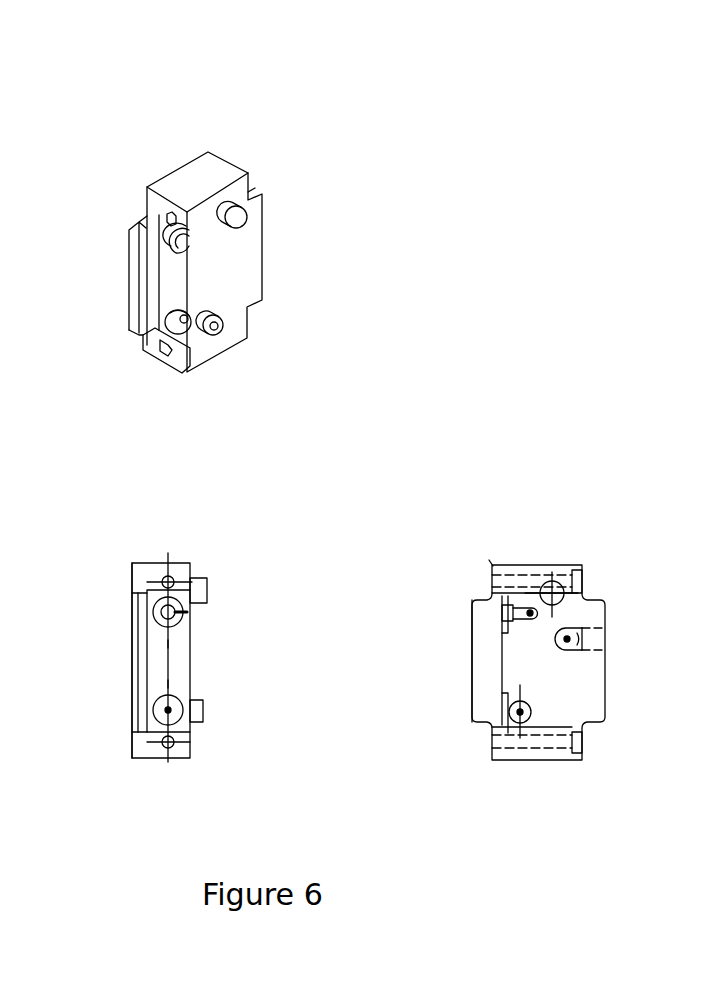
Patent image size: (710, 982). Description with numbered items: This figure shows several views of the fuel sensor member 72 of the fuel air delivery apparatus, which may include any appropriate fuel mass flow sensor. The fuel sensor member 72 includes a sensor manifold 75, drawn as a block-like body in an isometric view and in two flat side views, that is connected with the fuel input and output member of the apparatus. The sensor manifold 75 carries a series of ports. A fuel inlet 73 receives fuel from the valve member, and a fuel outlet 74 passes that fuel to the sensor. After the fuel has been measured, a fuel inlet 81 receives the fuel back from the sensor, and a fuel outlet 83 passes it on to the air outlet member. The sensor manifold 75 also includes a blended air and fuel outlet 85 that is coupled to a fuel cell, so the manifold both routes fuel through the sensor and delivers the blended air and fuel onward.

The fuel sensor member 72 is at (173, 138).
The sensor manifold 75 is at (267, 353).
The fuel inlet 81 is at (112, 612).
The fuel outlet 74 is at (147, 710).
The fuel outlet 83 is at (530, 613).
The blended air and fuel outlet 85 is at (567, 639).
The fuel inlet 73 is at (546, 712).